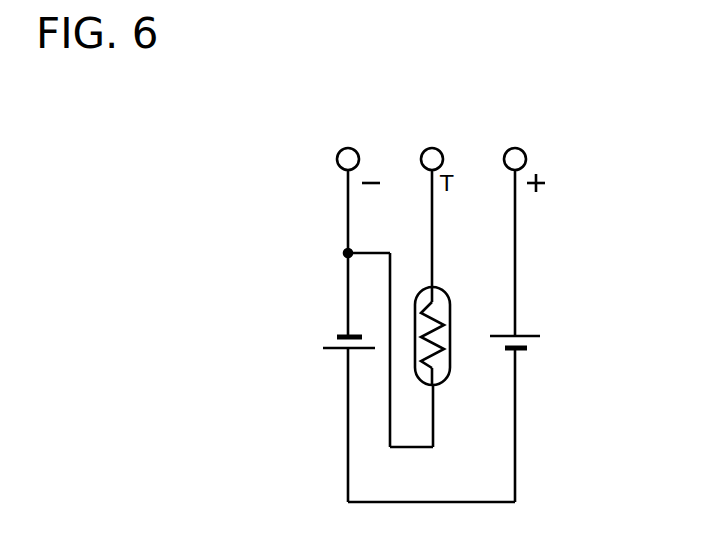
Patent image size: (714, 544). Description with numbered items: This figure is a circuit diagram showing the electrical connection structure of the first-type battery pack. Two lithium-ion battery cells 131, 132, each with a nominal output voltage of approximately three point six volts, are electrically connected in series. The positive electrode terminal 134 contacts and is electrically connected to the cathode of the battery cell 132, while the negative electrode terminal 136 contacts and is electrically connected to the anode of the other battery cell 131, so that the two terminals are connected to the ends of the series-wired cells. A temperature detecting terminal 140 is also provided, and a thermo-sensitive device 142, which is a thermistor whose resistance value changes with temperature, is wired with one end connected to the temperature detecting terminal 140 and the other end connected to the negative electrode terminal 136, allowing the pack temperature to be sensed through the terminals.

The negative electrode terminal 136 is at (348, 148).
The temperature detecting terminal 140 is at (432, 148).
The positive electrode terminal 134 is at (515, 148).
The battery cell 131 is at (335, 347).
The battery cell 132 is at (533, 333).
The thermo-sensitive device 142 is at (451, 362).